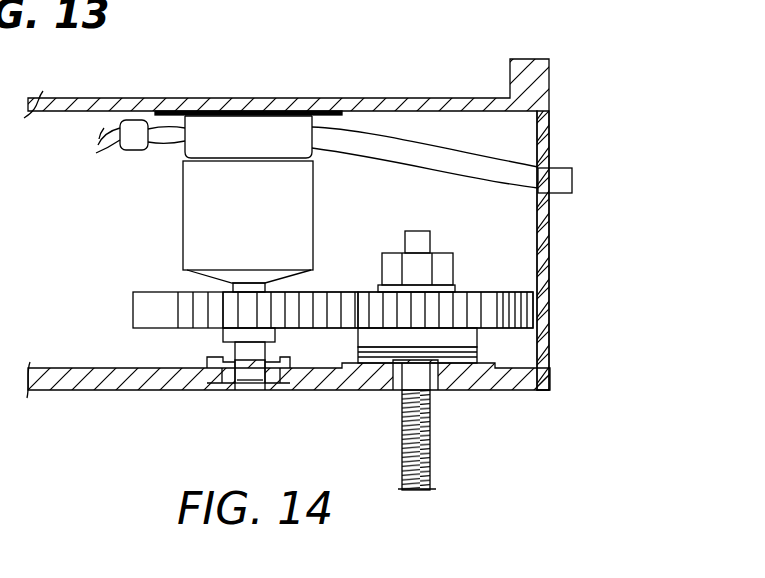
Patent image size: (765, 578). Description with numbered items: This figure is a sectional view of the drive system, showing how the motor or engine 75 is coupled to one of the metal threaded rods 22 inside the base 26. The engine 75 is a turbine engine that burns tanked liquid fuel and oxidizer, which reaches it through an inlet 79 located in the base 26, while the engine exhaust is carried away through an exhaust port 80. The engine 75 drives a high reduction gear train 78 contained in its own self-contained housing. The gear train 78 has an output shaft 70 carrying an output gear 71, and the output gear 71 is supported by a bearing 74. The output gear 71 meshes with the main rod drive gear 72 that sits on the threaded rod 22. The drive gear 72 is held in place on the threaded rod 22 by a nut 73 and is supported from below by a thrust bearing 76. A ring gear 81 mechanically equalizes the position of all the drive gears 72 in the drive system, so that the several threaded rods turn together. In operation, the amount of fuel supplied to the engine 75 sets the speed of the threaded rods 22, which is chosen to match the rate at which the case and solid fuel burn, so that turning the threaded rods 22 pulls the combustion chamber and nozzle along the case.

The threaded rod 22 is at (428, 446).
The base 26 is at (531, 59).
The output shaft 70 is at (233, 383).
The output gear 71 is at (289, 291).
The main rod drive gear 72 is at (522, 292).
The nut 73 is at (455, 268).
The bearing 74 is at (210, 368).
The motor or engine 75 is at (313, 136).
The thrust bearing 76 is at (478, 356).
The high reduction gear train 78 is at (183, 230).
The inlet 79 is at (118, 122).
The exhaust port 80 is at (560, 168).
The ring gear 81 is at (157, 292).